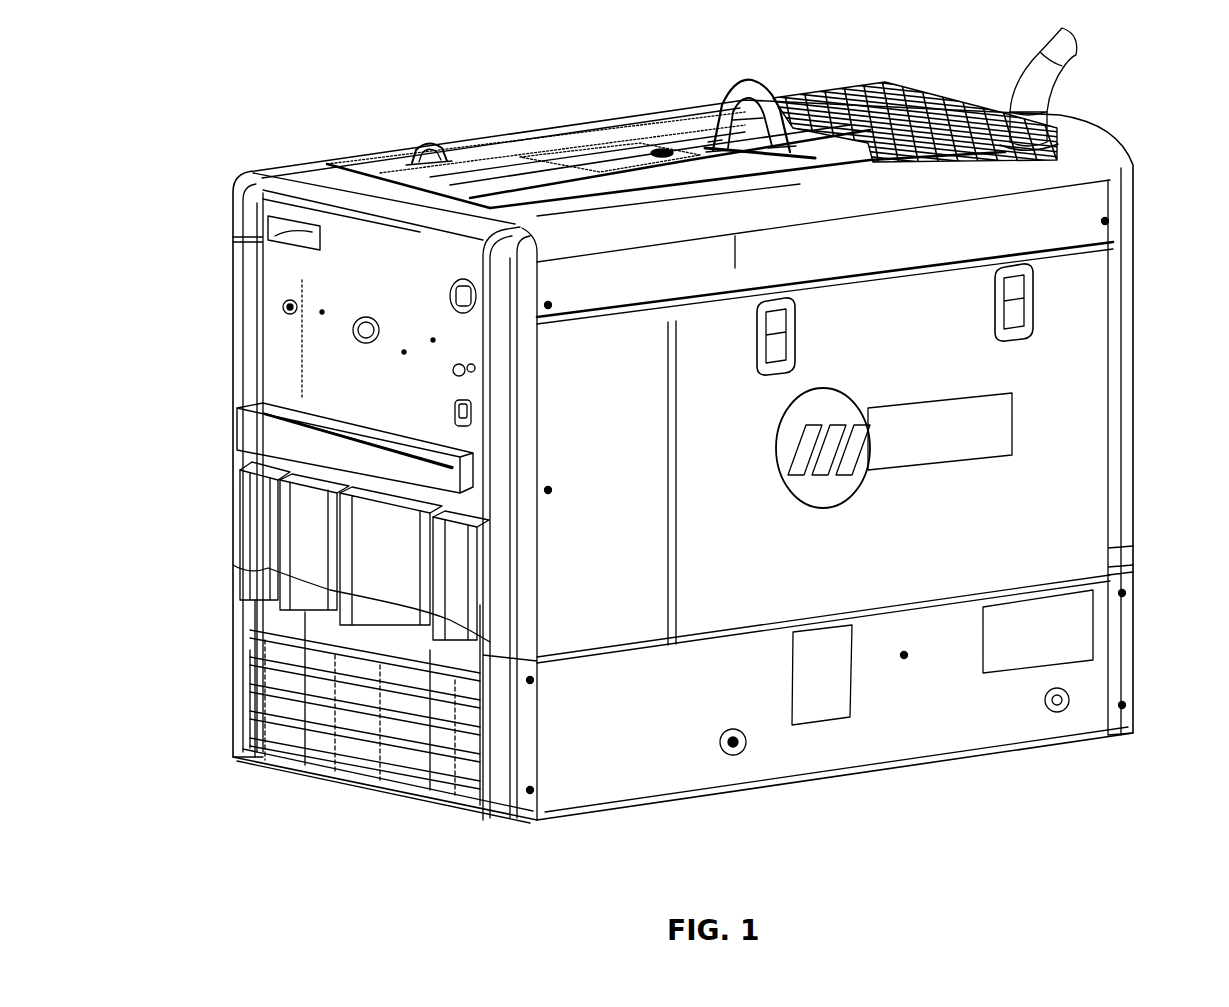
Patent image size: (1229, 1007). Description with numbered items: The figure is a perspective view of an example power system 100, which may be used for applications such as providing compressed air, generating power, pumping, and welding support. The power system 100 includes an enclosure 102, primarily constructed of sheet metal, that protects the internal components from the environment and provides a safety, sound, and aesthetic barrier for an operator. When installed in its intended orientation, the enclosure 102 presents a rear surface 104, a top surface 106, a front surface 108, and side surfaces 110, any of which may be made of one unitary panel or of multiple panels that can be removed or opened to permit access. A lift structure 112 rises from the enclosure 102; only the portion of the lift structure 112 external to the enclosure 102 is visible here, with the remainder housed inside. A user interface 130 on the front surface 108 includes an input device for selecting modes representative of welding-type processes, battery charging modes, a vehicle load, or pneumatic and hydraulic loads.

The power system 100 is at (182, 50).
The enclosure 102 is at (279, 167).
The rear surface 104 is at (1135, 233).
The top surface 106 is at (505, 158).
The front surface 108 is at (250, 370).
The side surfaces 110 is at (1015, 374).
The lift structure 112 is at (734, 93).
The user interface 130 is at (252, 221).